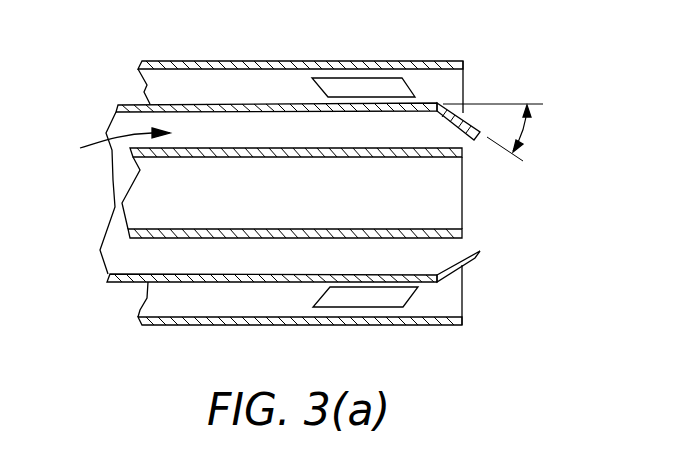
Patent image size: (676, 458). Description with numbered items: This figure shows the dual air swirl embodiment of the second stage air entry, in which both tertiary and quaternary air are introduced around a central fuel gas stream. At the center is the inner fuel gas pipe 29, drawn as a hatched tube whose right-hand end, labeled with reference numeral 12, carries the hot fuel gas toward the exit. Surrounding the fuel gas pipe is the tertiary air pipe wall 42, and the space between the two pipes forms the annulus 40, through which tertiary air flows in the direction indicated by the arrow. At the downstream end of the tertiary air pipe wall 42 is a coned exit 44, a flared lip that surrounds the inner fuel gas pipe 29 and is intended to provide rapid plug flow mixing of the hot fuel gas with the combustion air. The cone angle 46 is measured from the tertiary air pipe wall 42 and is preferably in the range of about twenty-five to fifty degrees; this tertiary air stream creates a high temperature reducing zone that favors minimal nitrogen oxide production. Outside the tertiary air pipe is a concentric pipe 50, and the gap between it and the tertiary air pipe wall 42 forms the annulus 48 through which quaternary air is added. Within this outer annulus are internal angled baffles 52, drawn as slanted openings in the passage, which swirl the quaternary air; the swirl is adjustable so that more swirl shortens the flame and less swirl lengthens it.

The exhaust pipe 12 is at (464, 205).
The inner fuel gas pipe 29 is at (260, 158).
The annulus 40 is at (110, 148).
The tertiary air pipe wall 42 is at (130, 104).
The coned exit 44 is at (474, 258).
The cone angle 46 is at (527, 133).
The annulus 48 is at (143, 305).
The concentric pipe 50 is at (212, 61).
The internal angled baffles 52 is at (350, 86).